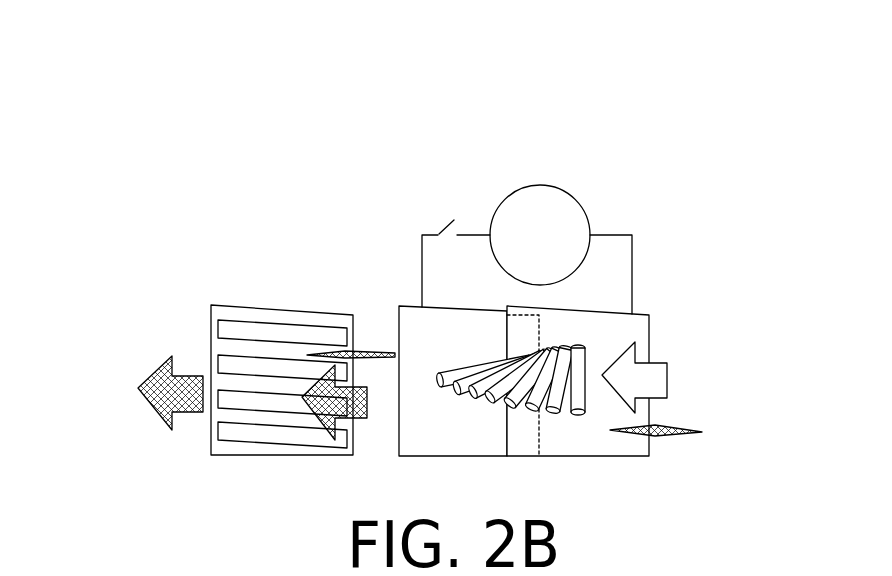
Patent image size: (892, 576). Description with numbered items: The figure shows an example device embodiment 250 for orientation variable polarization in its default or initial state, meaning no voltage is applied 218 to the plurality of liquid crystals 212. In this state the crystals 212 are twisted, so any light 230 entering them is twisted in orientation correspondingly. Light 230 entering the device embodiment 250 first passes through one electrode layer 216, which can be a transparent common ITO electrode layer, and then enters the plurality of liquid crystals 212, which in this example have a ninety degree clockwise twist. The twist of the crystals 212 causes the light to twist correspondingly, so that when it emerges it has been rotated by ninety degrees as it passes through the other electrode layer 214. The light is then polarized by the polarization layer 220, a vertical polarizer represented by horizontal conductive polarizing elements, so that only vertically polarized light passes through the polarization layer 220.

The device embodiment 250 is at (70, 54).
The plurality of liquid crystals 212 is at (482, 354).
The electrode layer 214 is at (399, 312).
The electrode layer 216 is at (650, 316).
The voltage applied 218 is at (470, 204).
The polarization layer 220 is at (244, 306).
The light 230 is at (722, 418).